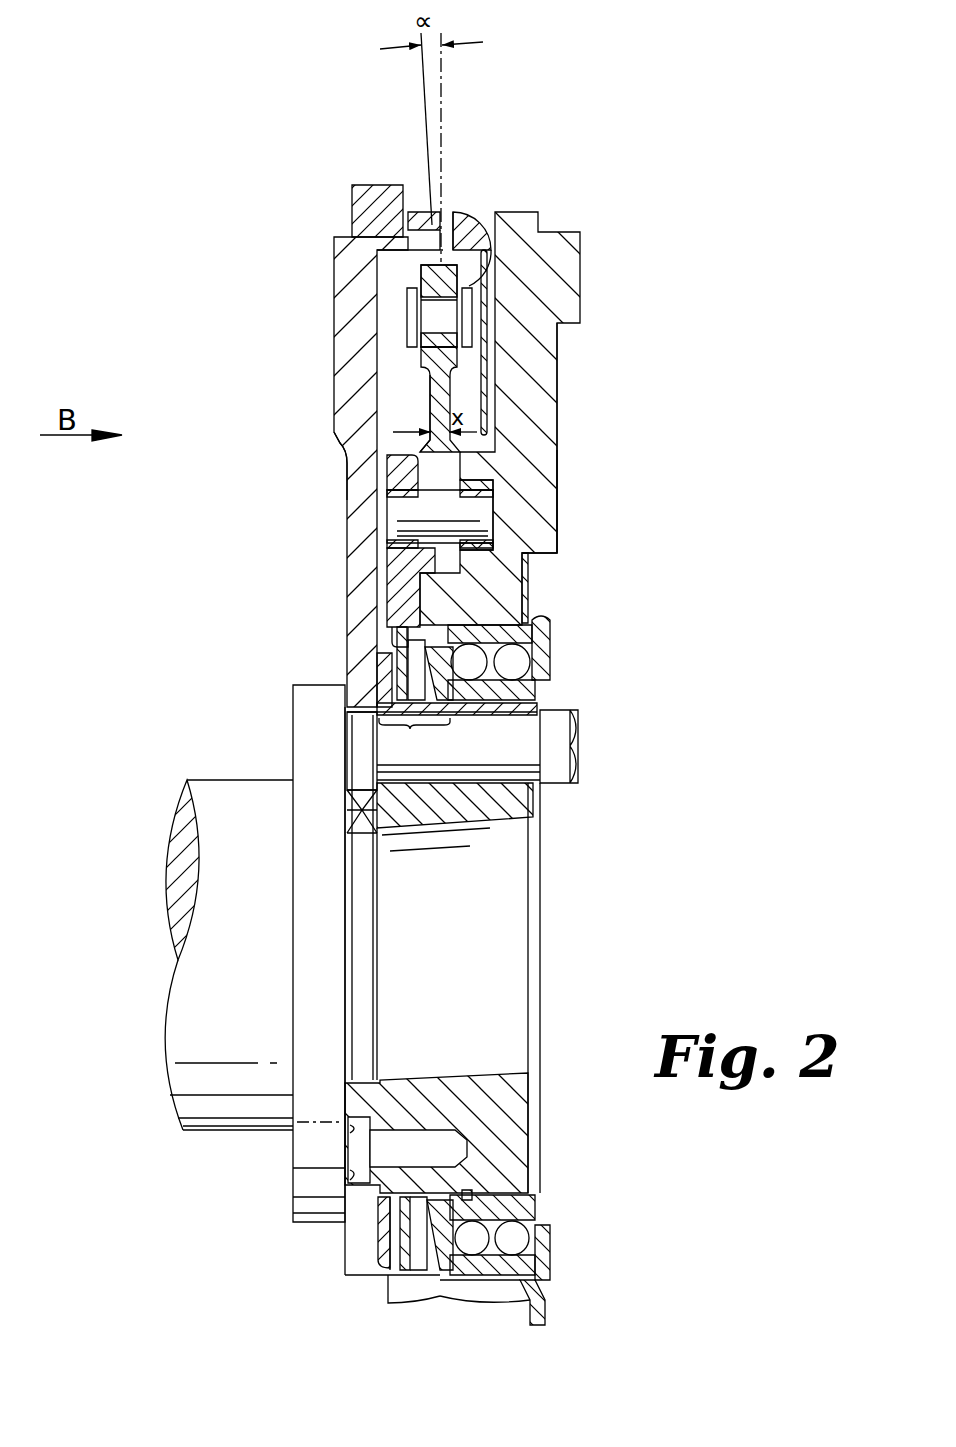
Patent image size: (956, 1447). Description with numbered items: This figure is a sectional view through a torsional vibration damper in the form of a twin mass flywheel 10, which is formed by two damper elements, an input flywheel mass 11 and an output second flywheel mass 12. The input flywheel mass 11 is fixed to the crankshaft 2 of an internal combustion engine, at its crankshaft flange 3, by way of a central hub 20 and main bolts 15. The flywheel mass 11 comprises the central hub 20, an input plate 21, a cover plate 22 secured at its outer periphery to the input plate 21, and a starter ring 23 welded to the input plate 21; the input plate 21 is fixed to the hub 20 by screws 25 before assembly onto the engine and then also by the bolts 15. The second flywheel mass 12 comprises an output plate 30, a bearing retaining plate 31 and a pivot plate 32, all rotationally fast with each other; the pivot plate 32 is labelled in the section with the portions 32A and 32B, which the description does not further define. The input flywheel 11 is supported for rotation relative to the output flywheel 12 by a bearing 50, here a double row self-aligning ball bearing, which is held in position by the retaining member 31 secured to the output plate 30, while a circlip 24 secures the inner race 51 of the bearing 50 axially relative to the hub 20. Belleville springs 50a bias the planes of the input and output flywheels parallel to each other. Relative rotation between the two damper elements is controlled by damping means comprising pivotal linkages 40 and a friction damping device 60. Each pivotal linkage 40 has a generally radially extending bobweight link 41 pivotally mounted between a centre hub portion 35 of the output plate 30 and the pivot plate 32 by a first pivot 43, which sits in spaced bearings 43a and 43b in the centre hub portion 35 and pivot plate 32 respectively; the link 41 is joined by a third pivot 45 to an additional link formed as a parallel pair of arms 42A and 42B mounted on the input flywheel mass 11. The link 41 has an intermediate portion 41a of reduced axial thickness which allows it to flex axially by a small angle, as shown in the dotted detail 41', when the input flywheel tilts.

The crankshaft 2 is at (183, 835).
The crankshaft flange 3 is at (315, 708).
The twin mass flywheel 10 is at (540, 520).
The flywheel mass 11 is at (356, 344).
The second flywheel mass 12 is at (552, 275).
The bolts 15 is at (580, 778).
The central hub 20 is at (535, 830).
The input plate 21 is at (340, 409).
The cover plate 22 is at (462, 223).
The starter ring 23 is at (362, 190).
The circlip 24 is at (475, 1195).
The screws 25 is at (422, 1145).
The output plate 30 is at (535, 385).
The bearing retaining plate 31 is at (550, 1257).
The pivot plate 32 is at (410, 580).
The bushing lower part 32A is at (410, 607).
The bushing upper part 32B is at (405, 478).
The centre hub portion 35 is at (490, 500).
The pivotal linkage 40 is at (422, 317).
The link 41 is at (527, 382).
The dotted detail 41' is at (469, 129).
The intermediate portion 41a is at (420, 385).
The arm 42A is at (500, 215).
The arm 42B is at (402, 300).
The first pivot 43 is at (490, 480).
The bearing 43a is at (525, 560).
The bearing 43b is at (410, 520).
The third pivot 45 is at (458, 313).
The bearing 50 is at (540, 658).
The Belleville springs 50a is at (545, 692).
The inner race 51 is at (530, 1210).
The friction damping device 60 is at (442, 733).